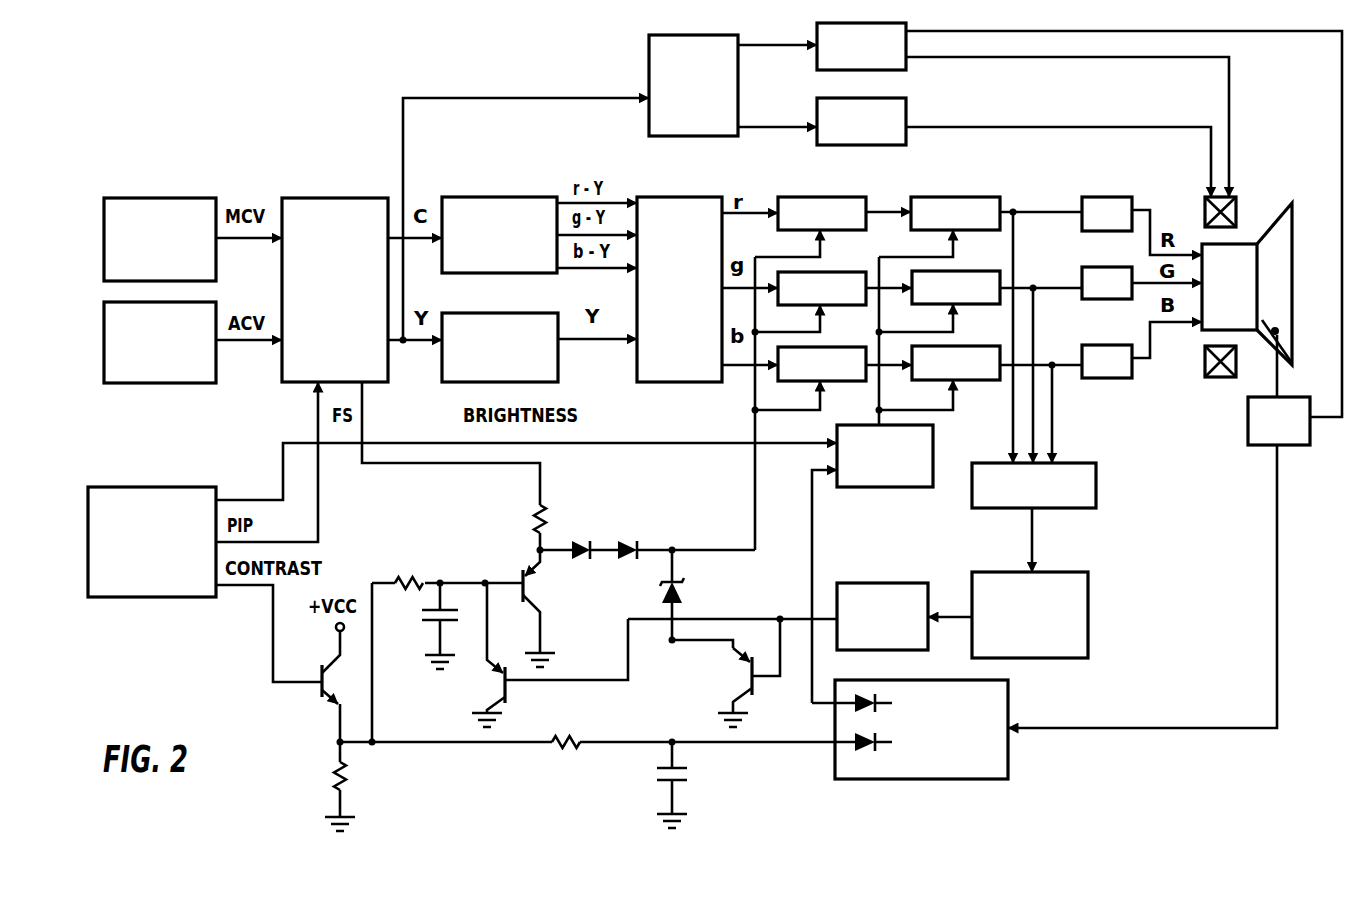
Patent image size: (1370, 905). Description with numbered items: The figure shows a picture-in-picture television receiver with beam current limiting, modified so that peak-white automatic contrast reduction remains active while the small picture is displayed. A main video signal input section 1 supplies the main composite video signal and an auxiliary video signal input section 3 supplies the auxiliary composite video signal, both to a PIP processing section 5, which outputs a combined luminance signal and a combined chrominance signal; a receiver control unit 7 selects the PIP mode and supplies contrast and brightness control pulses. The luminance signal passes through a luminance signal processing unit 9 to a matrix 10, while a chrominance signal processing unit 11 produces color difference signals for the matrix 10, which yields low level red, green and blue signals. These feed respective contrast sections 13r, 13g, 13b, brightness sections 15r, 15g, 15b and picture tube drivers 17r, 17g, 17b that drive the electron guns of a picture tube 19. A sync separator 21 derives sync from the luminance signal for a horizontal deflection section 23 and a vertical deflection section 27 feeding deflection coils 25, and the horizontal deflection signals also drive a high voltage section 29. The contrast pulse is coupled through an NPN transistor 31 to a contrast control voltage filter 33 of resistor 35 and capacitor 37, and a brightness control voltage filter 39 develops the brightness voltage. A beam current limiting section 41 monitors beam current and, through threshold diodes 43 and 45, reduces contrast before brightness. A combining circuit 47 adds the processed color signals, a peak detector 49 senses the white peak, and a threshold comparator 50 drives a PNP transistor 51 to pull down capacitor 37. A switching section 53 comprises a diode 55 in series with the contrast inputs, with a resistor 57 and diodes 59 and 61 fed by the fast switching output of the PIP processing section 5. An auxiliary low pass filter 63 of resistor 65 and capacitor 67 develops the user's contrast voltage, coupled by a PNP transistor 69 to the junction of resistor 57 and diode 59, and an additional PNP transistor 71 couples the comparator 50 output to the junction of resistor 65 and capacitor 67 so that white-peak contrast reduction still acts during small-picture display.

The main video signal input section 1 is at (176, 198).
The auxiliary video signal input section 3 is at (207, 383).
The PIP processing section 5 is at (330, 198).
The receiver control unit 7 is at (165, 487).
The luminance signal processing unit 9 is at (522, 313).
The matrix 10 is at (672, 197).
The chrominance signal processing unit 11 is at (510, 197).
The red contrast section 13r is at (812, 197).
The green contrast section 13g is at (820, 272).
The blue contrast section 13b is at (820, 347).
The red brightness section 15r is at (950, 197).
The green brightness section 15g is at (955, 271).
The blue brightness section 15b is at (955, 346).
The red picture tube driver 17r is at (1095, 197).
The green picture tube driver 17g is at (1095, 267).
The blue picture tube driver 17b is at (1095, 345).
The picture tube 19 is at (1295, 290).
The sync separator 21 is at (648, 60).
The horizontal deflection section 23 is at (816, 60).
The deflection coils 25 is at (1238, 226).
The vertical deflection section 27 is at (906, 100).
The high voltage section 29 is at (1248, 438).
The emitter-follower configured NPN transistor 31 is at (339, 691).
The contrast control voltage filter 33 is at (477, 841).
The resistor 35 is at (582, 742).
The capacitor 37 is at (660, 778).
The brightness control voltage filter 39 is at (925, 487).
The beam current limiting section 41 is at (1008, 705).
The diode 43 is at (855, 750).
The diode 45 is at (855, 711).
The combining circuit 47 is at (1095, 463).
The peak detector 49 is at (1082, 550).
The threshold comparator 50 is at (878, 583).
The emitter-follower configured PNP transistor 51 is at (713, 683).
The switching section 53 is at (658, 521).
The diode 55 is at (685, 602).
The resistor 57 is at (545, 532).
The diode 59 is at (582, 560).
The diode 61 is at (619, 540).
The auxiliary low pass filter 63 is at (433, 563).
The resistor 65 is at (413, 598).
The capacitor 67 is at (425, 625).
The emitter-follower configured PNP transistor 69 is at (538, 598).
The emitter-follower configured PNP transistor 71 is at (468, 691).